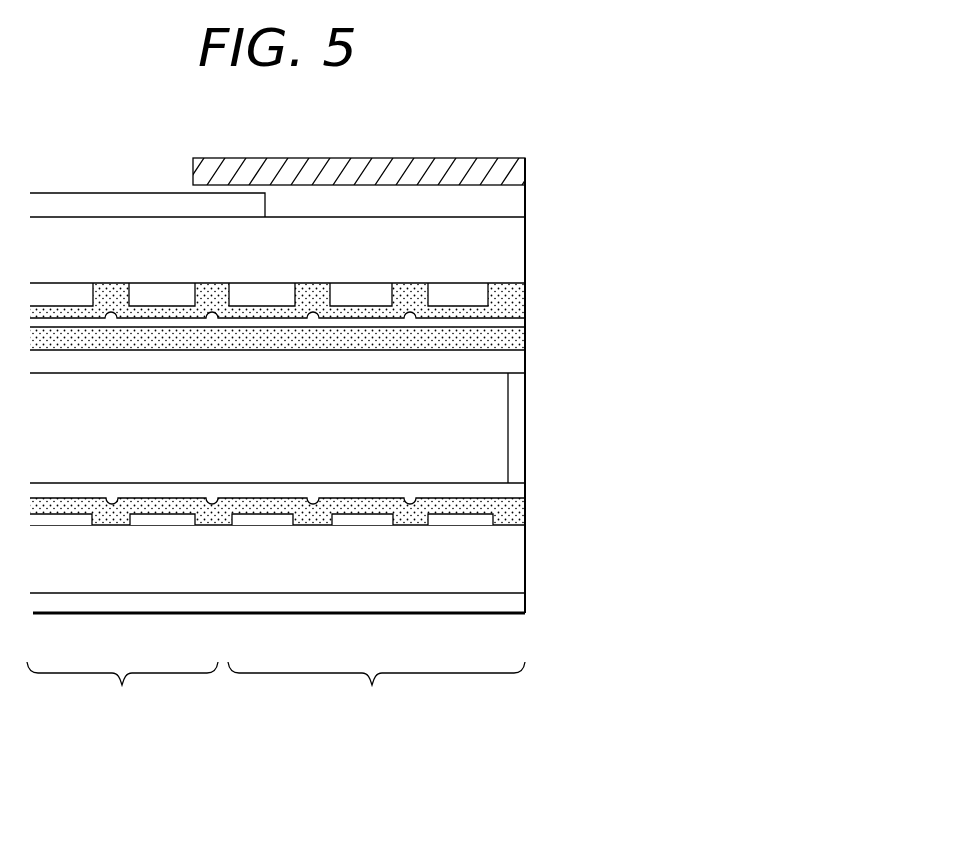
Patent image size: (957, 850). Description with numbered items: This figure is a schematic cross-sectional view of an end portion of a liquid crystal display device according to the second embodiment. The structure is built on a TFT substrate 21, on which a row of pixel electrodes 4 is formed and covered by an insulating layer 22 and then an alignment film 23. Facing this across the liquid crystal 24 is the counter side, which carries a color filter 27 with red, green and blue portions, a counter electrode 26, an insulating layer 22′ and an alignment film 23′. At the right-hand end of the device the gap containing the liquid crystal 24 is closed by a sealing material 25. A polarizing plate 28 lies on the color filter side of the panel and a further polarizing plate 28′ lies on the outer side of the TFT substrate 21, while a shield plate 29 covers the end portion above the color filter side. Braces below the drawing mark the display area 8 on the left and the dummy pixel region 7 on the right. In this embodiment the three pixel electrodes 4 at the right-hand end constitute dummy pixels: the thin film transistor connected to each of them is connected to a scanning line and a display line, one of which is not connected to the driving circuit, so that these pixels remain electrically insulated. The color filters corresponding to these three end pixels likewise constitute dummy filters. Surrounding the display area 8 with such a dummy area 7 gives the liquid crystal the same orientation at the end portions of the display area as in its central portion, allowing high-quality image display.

The shield plate 29 is at (363, 170).
The polarizing plate 28 is at (58, 203).
The color filter 27 is at (487, 288).
The counter electrode 26 is at (518, 323).
The insulating layer 22′ is at (519, 340).
The alignment film 23′ is at (513, 362).
The liquid crystal 24 is at (493, 400).
The sealing material 25 is at (517, 443).
The alignment film 23 is at (520, 490).
The insulating layer 22 is at (520, 510).
The pixel electrode 4 is at (482, 522).
The TFT substrate 21 is at (513, 568).
The polarizing plate 28′ is at (517, 602).
The display area 8 is at (122, 692).
The dummy pixel rows 7 is at (376, 693).